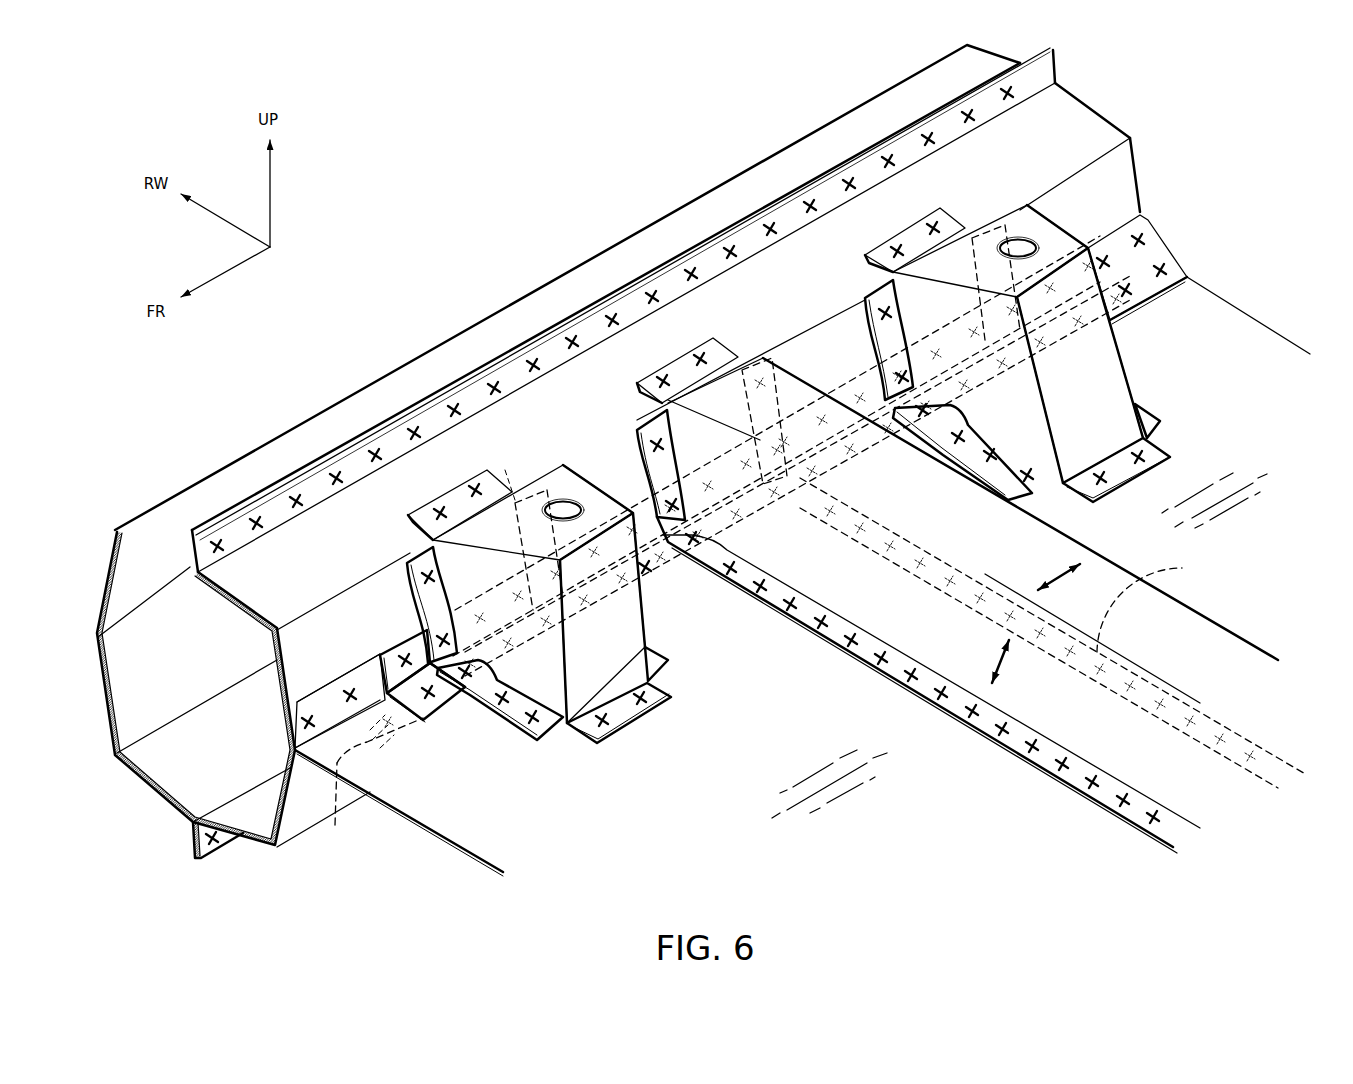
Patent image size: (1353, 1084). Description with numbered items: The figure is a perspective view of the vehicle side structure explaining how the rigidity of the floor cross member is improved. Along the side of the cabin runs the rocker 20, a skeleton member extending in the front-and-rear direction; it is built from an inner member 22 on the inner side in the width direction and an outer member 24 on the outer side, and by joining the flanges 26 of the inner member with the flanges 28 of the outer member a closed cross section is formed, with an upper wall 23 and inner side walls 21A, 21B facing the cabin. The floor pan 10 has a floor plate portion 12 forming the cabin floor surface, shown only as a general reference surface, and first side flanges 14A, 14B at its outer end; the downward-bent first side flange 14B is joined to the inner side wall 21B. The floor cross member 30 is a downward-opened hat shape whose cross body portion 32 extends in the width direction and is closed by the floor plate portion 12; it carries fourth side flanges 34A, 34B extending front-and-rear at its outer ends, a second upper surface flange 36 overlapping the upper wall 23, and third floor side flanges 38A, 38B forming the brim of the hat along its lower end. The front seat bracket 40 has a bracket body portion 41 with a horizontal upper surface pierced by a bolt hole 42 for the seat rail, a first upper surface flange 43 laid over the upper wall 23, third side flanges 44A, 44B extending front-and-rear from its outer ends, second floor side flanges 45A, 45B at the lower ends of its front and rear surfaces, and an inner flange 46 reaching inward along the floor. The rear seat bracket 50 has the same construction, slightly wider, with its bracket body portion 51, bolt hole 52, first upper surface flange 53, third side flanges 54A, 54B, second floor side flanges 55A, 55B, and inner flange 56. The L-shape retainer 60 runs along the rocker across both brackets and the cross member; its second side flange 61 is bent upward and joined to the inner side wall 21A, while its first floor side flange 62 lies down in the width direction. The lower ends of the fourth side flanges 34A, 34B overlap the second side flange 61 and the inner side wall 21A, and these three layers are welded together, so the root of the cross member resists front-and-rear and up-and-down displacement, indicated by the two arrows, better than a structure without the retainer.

The floor pan 10 is at (410, 832).
The floor plate portion 12 is at (400, 787).
The first side flange 14A is at (318, 742).
The first side flange 14B is at (329, 810).
The rocker 20 is at (539, 287).
The inner side wall 21A is at (297, 662).
The inner side wall 21B is at (328, 795).
The inner member 22 is at (318, 541).
The upper wall 23 is at (250, 587).
The outer member 24 is at (250, 485).
The flanges 26 is at (232, 527).
The flanges 28 is at (192, 548).
The floor cross member 30 is at (934, 571).
The cross body portion 32 is at (843, 578).
The fourth side flange 34A is at (637, 410).
The fourth side flange 34B is at (797, 363).
The second upper surface flange 36 is at (683, 370).
The third floor side flange 38A is at (867, 650).
The third floor side flange 38B is at (1184, 597).
The front seat bracket 40 is at (546, 590).
The bracket body portion 41 is at (648, 637).
The bolt hole 42 is at (577, 505).
The first upper surface flange 43 is at (460, 497).
The third side flange 44A is at (427, 603).
The third side flange 44B is at (576, 476).
The second floor side flange 45A is at (510, 727).
The second floor side flange 45B is at (652, 660).
The inner flange 46 is at (637, 714).
The rear seat bracket 50 is at (1026, 337).
The bracket body portion 51 is at (1025, 220).
The bolt hole 52 is at (1040, 240).
The first upper surface flange 53 is at (913, 233).
The third side flange 54A is at (882, 333).
The third side flange 54B is at (980, 238).
The second floor side flange 55A is at (1037, 490).
The second floor side flange 55B is at (1150, 413).
The inner flange 56 is at (1163, 455).
The L-shape retainer 60 is at (437, 717).
The second side flange 61 is at (403, 640).
The first floor side flange 62 is at (445, 693).